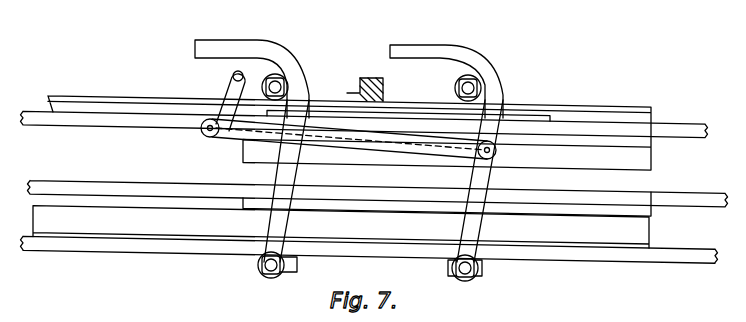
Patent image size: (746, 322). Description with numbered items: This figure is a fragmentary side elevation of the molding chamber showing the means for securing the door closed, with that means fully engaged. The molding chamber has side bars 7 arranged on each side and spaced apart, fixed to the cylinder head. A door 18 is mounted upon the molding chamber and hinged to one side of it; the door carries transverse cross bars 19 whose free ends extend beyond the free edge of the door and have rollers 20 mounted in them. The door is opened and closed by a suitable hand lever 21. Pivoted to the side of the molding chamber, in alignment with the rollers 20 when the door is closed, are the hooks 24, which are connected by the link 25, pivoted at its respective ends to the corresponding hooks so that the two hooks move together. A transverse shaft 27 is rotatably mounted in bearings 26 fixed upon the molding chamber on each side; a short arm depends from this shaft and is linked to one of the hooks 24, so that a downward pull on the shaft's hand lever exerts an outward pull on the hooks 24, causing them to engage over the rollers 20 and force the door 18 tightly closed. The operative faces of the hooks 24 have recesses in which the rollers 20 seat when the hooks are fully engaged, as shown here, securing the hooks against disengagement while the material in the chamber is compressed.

The side bars 7 is at (686, 124).
The door 18 is at (419, 100).
The transverse cross bars 19 is at (290, 90).
The rollers 20 is at (262, 88).
The hand lever 21 is at (372, 78).
The hooks 24 is at (238, 45).
The link 25 is at (313, 152).
The bearings 26 is at (222, 138).
The transverse shaft 27 is at (234, 77).